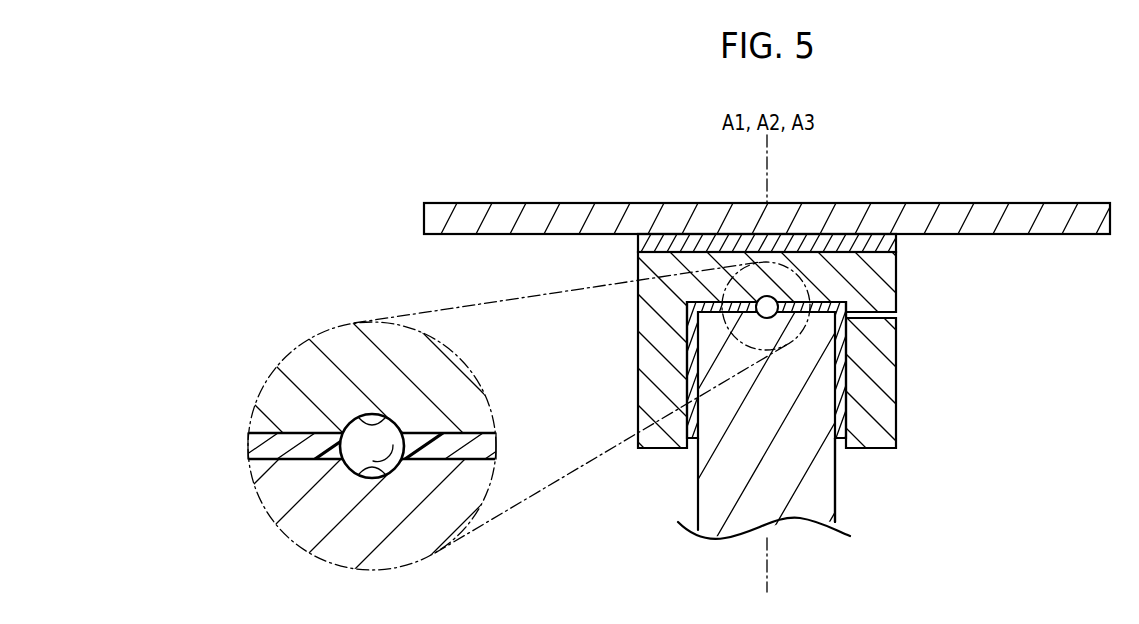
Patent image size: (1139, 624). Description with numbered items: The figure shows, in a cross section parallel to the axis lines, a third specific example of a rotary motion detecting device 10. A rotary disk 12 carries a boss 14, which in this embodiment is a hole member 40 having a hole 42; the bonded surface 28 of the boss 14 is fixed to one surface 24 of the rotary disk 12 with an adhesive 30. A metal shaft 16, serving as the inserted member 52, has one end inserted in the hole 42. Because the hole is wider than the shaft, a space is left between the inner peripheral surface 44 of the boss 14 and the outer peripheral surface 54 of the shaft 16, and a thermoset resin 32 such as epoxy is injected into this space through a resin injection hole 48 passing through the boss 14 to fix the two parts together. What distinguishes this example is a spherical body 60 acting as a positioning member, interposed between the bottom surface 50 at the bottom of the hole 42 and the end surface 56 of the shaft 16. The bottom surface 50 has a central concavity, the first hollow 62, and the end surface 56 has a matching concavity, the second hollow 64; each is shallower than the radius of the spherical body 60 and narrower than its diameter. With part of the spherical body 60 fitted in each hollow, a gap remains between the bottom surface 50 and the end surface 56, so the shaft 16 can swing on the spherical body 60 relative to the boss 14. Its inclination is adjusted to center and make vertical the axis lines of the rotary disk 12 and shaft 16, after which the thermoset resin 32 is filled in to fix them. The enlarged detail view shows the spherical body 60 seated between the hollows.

The rotary motion detecting device 10 is at (530, 113).
The rotary disk 12 is at (995, 218).
The boss 14 is at (665, 352).
The hole member 40 is at (570, 350).
The shaft 16 is at (697, 504).
The inserted member 52 is at (554, 464).
The one surface 24 is at (497, 235).
The bonded surface 28 is at (683, 233).
The adhesive 30 is at (882, 240).
The thermoset resin 32 is at (847, 370).
The hole 42 is at (691, 462).
The inner peripheral surface 44 is at (842, 413).
The resin injection hole 48 is at (890, 313).
The bottom surface 50 is at (787, 313).
The outer peripheral surface 54 is at (838, 488).
The end surface 56 is at (729, 255).
The spherical body 60 is at (769, 296).
The first hollow 62 is at (374, 428).
The second hollow 64 is at (356, 470).